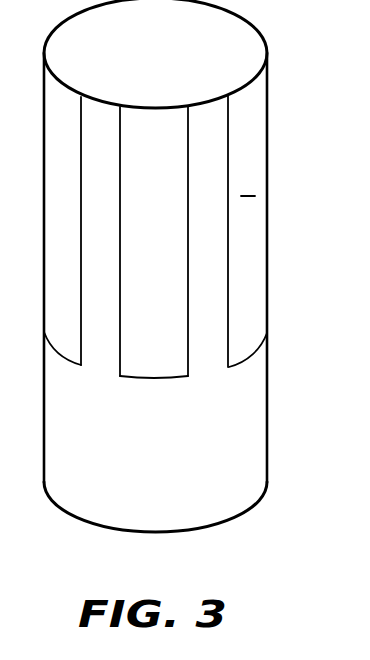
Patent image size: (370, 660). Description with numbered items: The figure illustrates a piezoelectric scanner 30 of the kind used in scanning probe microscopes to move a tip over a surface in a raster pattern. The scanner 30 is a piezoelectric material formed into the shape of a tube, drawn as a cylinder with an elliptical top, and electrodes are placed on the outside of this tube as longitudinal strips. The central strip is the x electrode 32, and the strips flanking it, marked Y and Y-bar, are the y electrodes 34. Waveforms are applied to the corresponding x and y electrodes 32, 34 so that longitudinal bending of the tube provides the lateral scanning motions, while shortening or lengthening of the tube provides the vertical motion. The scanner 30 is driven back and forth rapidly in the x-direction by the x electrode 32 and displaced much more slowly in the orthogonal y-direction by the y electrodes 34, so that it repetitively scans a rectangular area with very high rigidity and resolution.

The scanner 30 is at (252, 427).
The x electrode 32 is at (158, 362).
The y electrode 34 is at (252, 137).